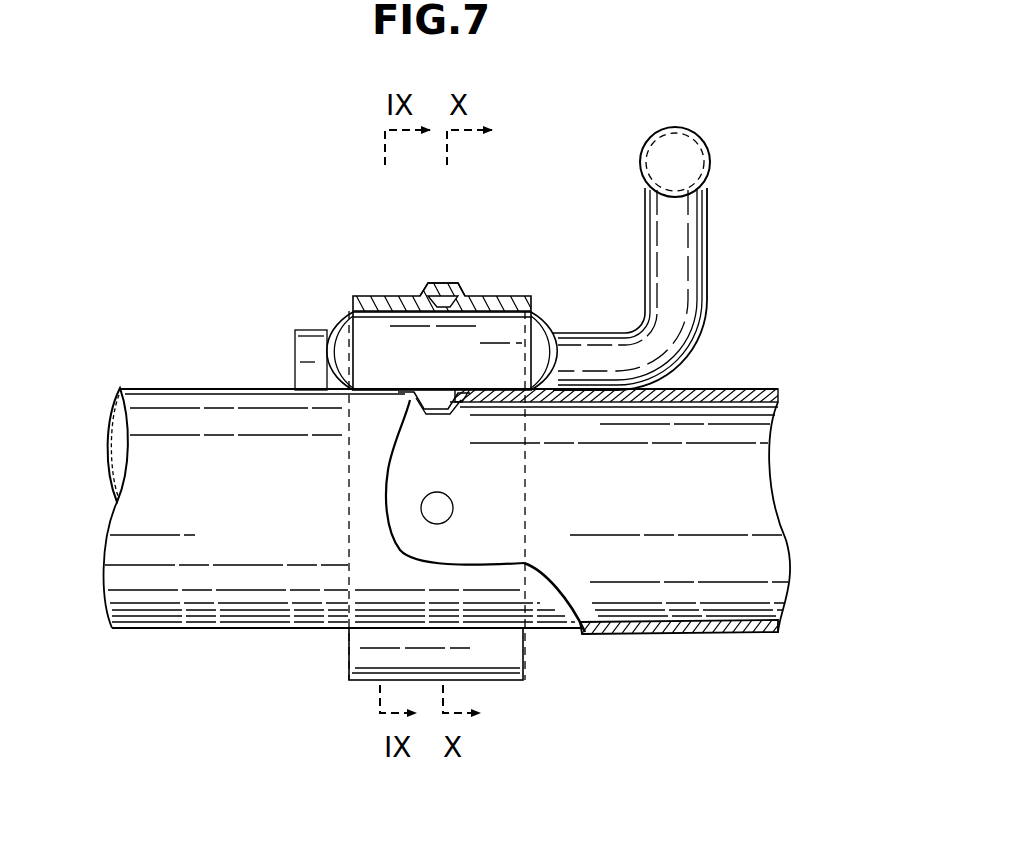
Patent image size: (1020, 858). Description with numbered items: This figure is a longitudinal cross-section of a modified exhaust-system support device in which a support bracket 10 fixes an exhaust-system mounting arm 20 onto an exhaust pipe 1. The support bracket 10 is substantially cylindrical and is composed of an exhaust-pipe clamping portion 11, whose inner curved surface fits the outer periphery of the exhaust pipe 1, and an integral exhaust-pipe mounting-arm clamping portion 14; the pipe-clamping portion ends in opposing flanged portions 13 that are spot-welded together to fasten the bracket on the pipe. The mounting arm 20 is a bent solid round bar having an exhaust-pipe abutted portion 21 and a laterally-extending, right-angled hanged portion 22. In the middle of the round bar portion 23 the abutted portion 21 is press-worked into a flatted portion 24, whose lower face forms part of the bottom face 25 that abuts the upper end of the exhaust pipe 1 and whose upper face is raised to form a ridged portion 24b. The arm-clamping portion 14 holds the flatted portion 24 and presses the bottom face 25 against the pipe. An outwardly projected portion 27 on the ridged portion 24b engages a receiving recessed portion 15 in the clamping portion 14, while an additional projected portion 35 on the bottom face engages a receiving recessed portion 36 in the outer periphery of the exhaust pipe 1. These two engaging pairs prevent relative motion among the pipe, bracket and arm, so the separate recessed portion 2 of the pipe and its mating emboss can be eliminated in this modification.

The exhaust pipe 1 is at (750, 392).
The recessed portion 2 is at (455, 510).
The exhaust-system support bracket 10 is at (349, 657).
The exhaust-pipe clamping portion 11 is at (349, 536).
The flanged portion 13 is at (523, 662).
The exhaust-pipe mounting-arm clamping portion 14 is at (403, 295).
The outwardly-projected-portion receiving recessed portion 15 is at (433, 290).
The exhaust-system mounting arm 20 is at (708, 218).
The exhaust-pipe abutted portion 21 is at (296, 352).
The hanged portion 22 is at (700, 147).
The round bar portion 23 is at (592, 333).
The flatted portion 24 is at (370, 338).
The ridged portion 24b is at (357, 297).
The bottom face 25 is at (613, 402).
The outwardly projected portion 27 is at (445, 306).
The additional projected portion 35 is at (458, 402).
The projected-portion receiving recessed portion 36 is at (438, 410).